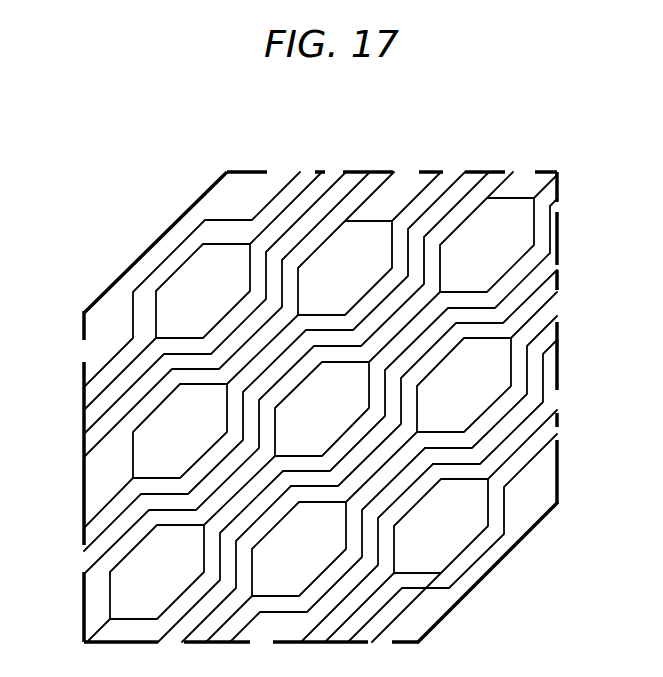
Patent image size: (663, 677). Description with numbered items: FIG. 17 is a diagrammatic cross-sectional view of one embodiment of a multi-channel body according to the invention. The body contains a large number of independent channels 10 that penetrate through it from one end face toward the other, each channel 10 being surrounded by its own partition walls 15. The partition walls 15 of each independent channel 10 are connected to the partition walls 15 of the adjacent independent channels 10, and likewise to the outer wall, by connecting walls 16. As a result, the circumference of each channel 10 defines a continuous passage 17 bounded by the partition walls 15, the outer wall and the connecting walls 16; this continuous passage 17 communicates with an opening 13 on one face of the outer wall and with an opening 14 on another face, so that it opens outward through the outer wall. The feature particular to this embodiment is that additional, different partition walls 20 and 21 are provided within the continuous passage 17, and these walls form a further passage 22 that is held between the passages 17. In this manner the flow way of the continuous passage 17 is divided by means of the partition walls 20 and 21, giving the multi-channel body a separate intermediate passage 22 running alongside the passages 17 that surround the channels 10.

The independent channel 10 is at (286, 226).
The opening 13 is at (523, 178).
The opening 14 is at (87, 556).
The partition wall 15 is at (316, 272).
The connecting wall 16 is at (250, 352).
The continuous passage 17 is at (483, 307).
The partition wall 20 is at (414, 224).
The partition wall 21 is at (444, 220).
The passage 22 is at (546, 270).